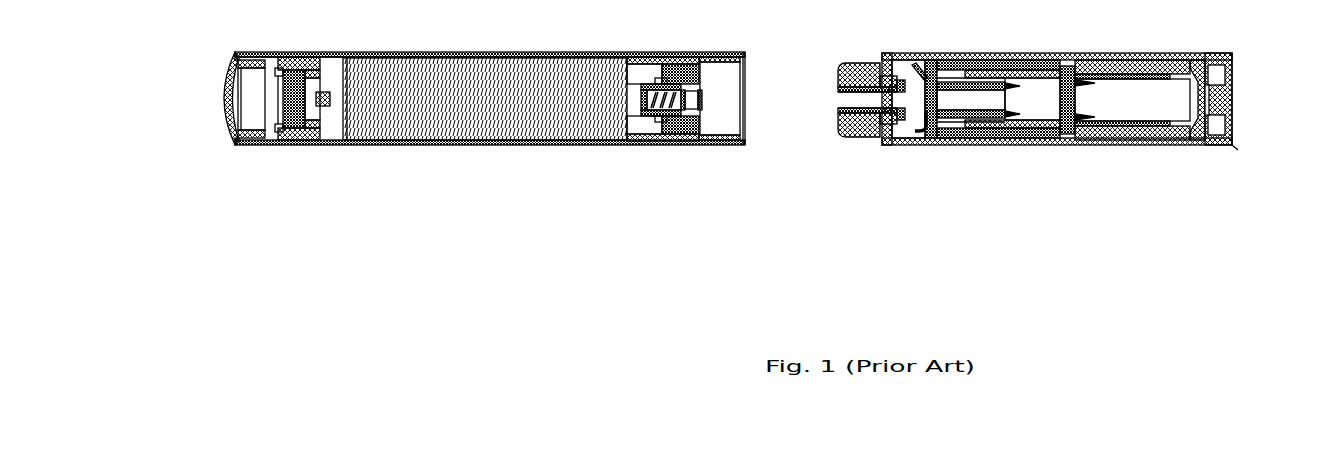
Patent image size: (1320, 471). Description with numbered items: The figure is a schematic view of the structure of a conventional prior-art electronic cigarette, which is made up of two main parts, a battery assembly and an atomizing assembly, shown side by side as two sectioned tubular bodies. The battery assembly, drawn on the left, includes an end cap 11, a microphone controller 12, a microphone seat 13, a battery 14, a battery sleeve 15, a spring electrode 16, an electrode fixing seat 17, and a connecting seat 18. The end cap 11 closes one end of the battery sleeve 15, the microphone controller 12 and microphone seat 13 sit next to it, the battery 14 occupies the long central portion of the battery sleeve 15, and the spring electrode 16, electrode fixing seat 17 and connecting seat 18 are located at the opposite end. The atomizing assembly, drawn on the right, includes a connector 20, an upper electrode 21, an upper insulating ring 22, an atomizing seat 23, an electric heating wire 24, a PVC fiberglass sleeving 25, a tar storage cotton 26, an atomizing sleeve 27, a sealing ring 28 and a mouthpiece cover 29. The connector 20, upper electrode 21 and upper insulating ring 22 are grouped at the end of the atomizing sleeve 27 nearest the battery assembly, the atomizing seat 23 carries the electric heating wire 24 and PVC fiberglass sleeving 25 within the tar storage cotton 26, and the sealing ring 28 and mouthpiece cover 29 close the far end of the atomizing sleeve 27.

The end cap 11 is at (233, 143).
The microphone controller 12 is at (277, 143).
The microphone seat 13 is at (305, 143).
The battery 14 is at (398, 141).
The battery sleeve 15 is at (477, 145).
The spring electrode 16 is at (645, 130).
The electrode fixing seat 17 is at (672, 143).
The connecting seat 18 is at (738, 145).
The connector 20 is at (848, 140).
The upper electrode 21 is at (853, 140).
The upper insulating ring 22 is at (890, 143).
The atomizing seat 23 is at (940, 143).
The electric heating wire 24 is at (1058, 143).
The PVC fiberglass sleeving 25 is at (1095, 143).
The tar storage cotton 26 is at (1123, 143).
The atomizing sleeve 27 is at (1153, 143).
The sealing ring 28 is at (1205, 143).
The mouthpiece cover 29 is at (1232, 143).